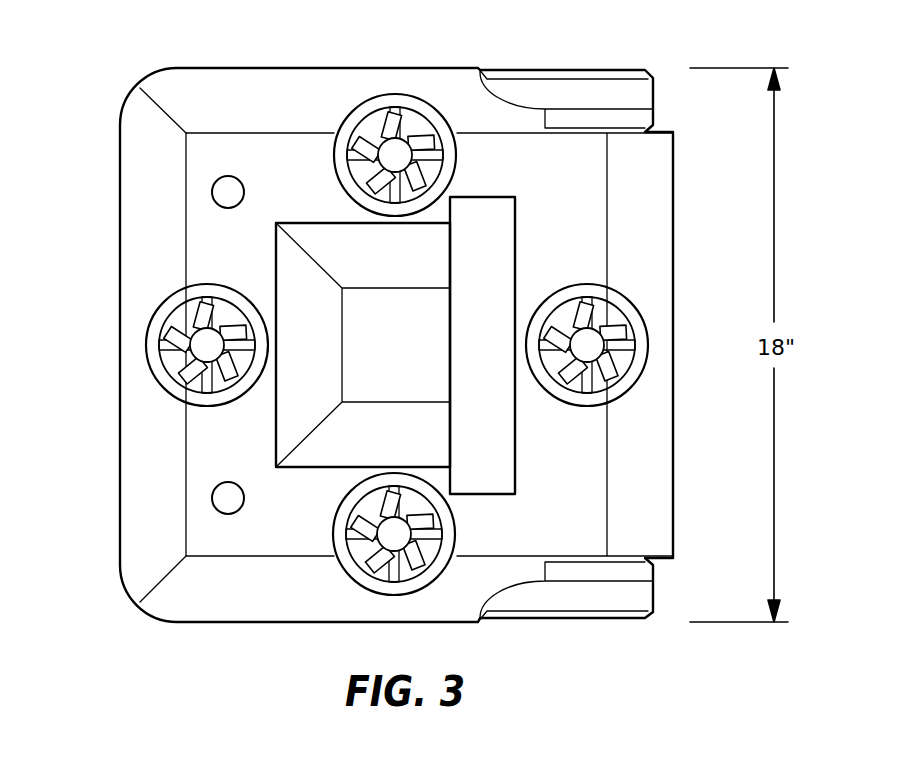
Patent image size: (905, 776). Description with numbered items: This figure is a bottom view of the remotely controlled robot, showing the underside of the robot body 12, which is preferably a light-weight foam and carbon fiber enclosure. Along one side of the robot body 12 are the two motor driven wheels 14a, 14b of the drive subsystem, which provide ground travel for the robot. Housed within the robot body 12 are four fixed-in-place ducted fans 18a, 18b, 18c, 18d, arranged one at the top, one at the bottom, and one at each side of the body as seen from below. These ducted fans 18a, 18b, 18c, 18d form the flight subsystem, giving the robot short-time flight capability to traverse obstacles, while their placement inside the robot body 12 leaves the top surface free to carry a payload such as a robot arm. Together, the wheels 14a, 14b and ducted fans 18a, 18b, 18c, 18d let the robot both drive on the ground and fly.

The robot body 12 is at (135, 122).
The motor driven wheel 14a is at (592, 97).
The motor driven wheel 14b is at (613, 595).
The ducted fan 18a is at (613, 313).
The ducted fan 18b is at (419, 120).
The ducted fan 18c is at (172, 323).
The ducted fan 18d is at (367, 562).